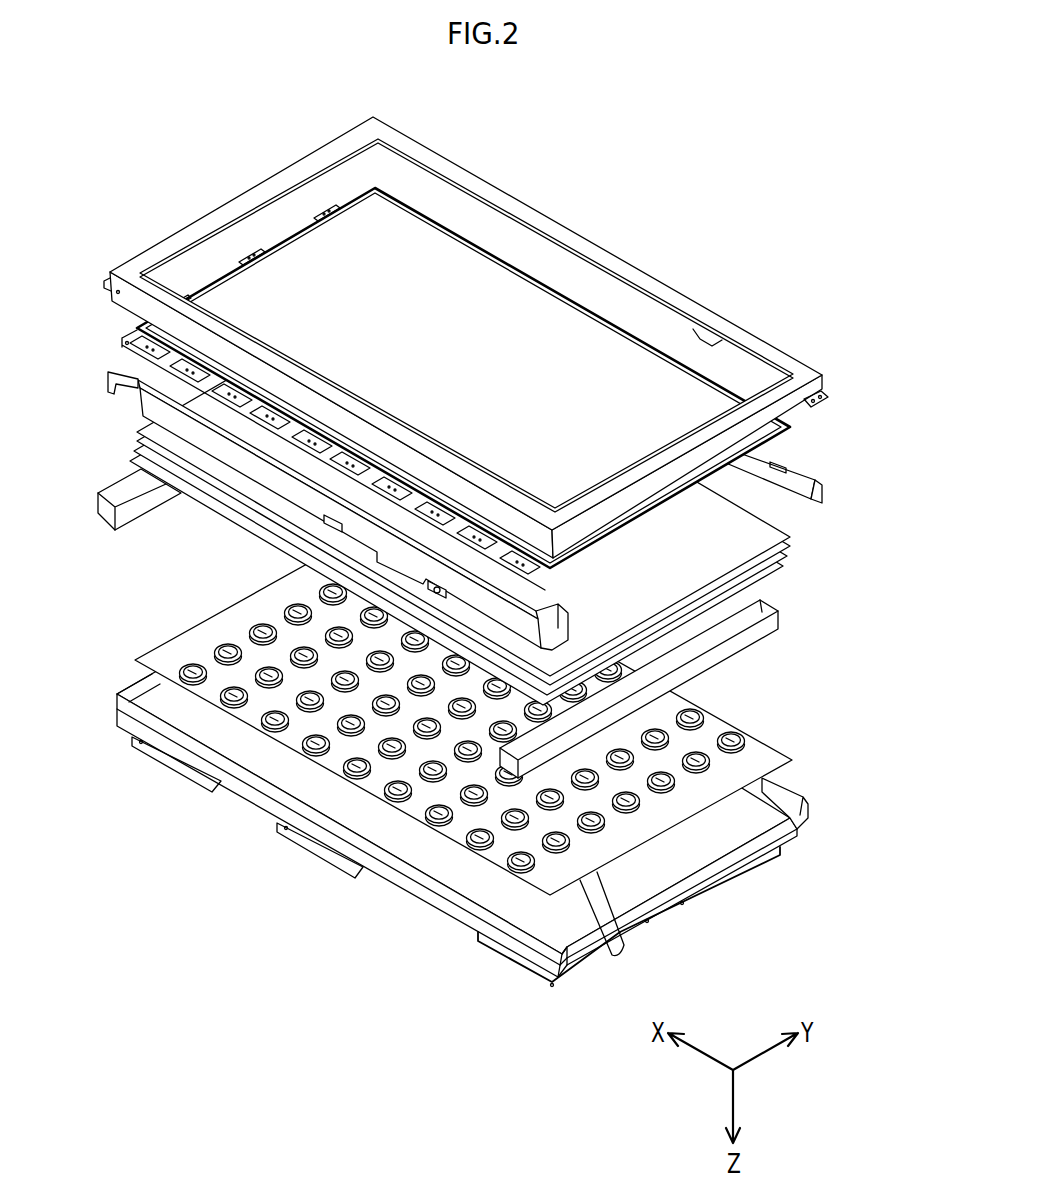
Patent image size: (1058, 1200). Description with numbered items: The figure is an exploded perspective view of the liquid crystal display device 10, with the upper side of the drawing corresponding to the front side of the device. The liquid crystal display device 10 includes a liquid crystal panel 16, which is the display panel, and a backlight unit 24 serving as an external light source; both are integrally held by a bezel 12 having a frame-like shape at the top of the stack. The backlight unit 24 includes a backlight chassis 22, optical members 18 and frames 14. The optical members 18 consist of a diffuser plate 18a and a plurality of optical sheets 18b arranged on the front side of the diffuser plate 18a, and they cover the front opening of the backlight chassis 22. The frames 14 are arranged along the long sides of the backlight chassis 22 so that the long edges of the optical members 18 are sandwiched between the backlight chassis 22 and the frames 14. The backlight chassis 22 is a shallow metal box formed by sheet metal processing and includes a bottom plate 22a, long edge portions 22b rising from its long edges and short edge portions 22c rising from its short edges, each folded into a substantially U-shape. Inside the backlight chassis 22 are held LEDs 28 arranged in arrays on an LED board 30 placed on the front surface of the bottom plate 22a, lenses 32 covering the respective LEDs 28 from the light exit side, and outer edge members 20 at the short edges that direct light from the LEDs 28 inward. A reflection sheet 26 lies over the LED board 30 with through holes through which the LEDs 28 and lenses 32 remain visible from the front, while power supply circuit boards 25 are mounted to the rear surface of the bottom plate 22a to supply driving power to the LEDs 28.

The liquid crystal display device 10 is at (475, 571).
The bezel 12 is at (657, 280).
The frames 14 is at (150, 412).
The liquid crystal panel 16 is at (288, 238).
The optical members 18 is at (514, 499).
The diffuser plate 18a is at (782, 562).
The optical sheets 18b is at (797, 526).
The outer edge members 20 is at (112, 490).
The backlight chassis 22 is at (484, 797).
The bottom plate 22a is at (275, 762).
The long edge portions 22b is at (538, 953).
The short edge portions 22c is at (575, 948).
The backlight unit 24 is at (802, 850).
The power supply circuit boards 25 is at (706, 889).
The reflection sheet 26 is at (480, 766).
The LEDs 28 is at (435, 812).
The LED board 30 is at (483, 860).
The lenses 32 is at (380, 785).